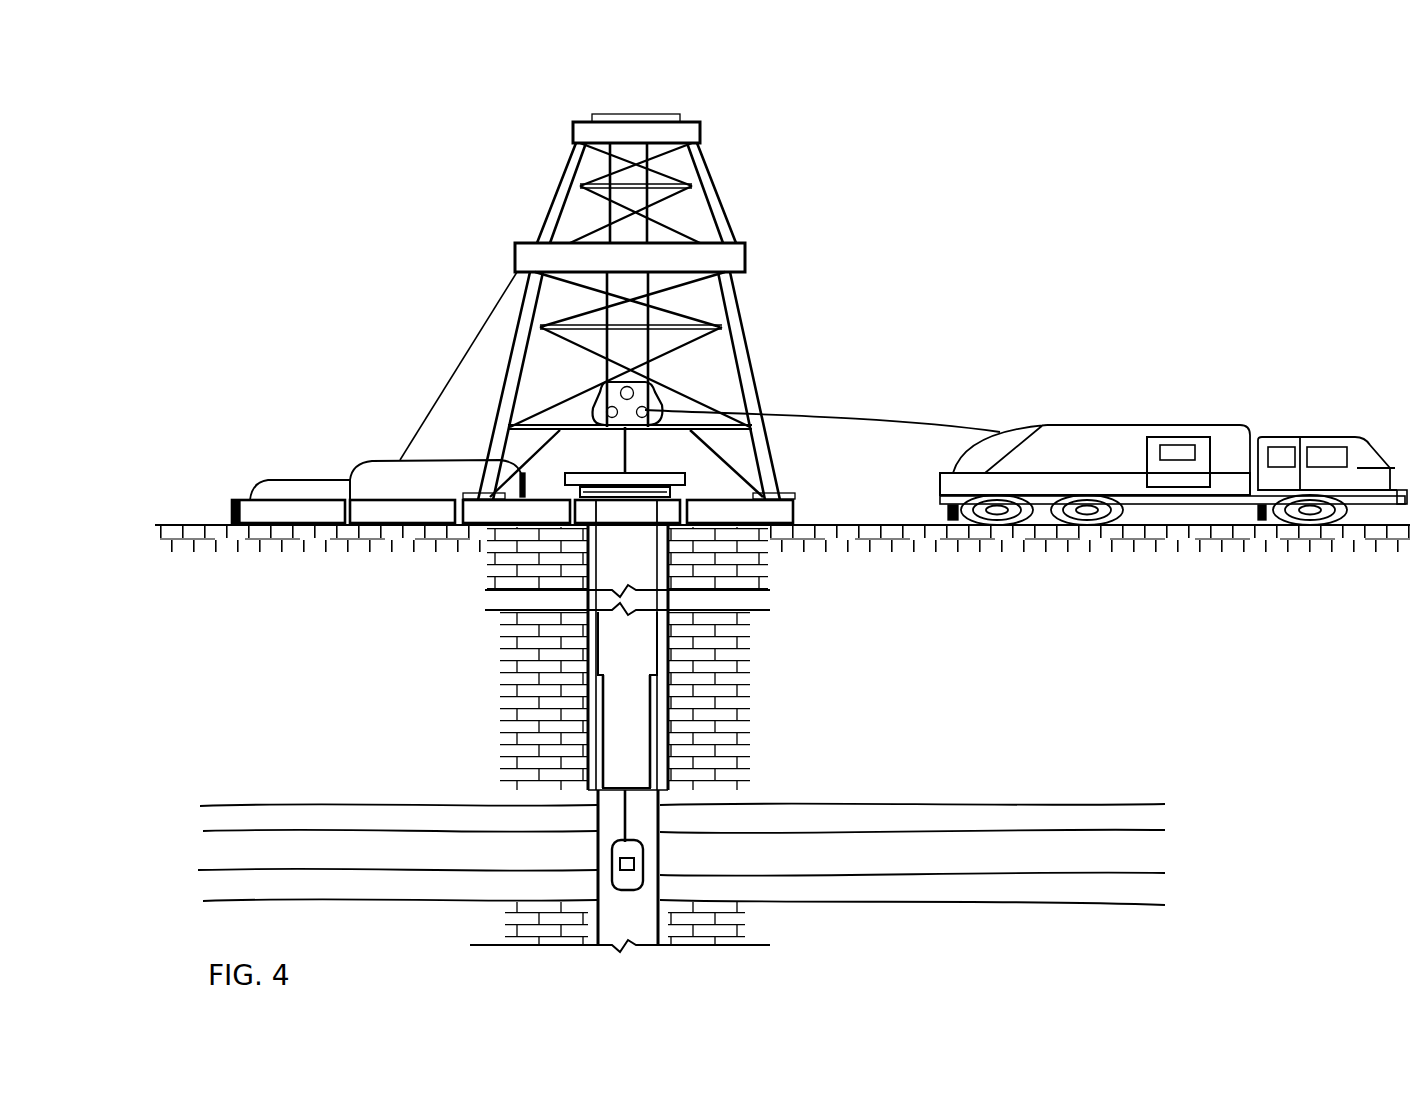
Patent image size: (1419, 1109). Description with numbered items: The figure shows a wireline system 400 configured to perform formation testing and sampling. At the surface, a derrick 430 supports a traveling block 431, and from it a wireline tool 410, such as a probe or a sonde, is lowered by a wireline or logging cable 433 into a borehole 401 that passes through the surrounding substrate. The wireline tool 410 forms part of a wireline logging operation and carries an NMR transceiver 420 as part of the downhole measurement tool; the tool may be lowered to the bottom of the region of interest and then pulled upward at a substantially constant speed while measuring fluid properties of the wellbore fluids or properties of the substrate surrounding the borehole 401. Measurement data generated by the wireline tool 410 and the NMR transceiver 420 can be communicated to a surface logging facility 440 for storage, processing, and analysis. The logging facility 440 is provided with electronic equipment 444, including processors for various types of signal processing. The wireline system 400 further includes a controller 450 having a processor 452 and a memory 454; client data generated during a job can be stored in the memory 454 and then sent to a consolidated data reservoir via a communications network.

The wireline system 400 is at (146, 114).
The borehole 401 is at (597, 818).
The wireline tool 410 is at (660, 840).
The NMR transceiver 420 is at (645, 865).
The derrick 430 is at (778, 490).
The traveling block 431 is at (655, 384).
The wireline or logging cable 433 is at (855, 420).
The surface logging facility 440 is at (1085, 423).
The electronic equipment 444 is at (1190, 440).
The controller 450 is at (458, 560).
The processor 452 is at (270, 510).
The memory 454 is at (398, 510).